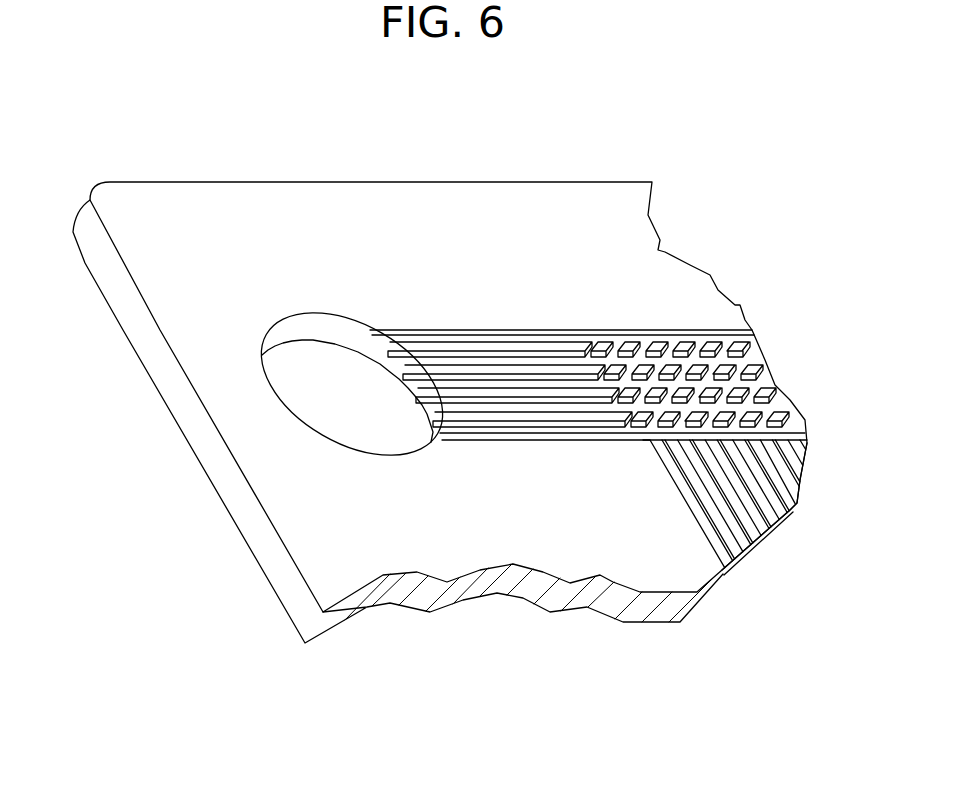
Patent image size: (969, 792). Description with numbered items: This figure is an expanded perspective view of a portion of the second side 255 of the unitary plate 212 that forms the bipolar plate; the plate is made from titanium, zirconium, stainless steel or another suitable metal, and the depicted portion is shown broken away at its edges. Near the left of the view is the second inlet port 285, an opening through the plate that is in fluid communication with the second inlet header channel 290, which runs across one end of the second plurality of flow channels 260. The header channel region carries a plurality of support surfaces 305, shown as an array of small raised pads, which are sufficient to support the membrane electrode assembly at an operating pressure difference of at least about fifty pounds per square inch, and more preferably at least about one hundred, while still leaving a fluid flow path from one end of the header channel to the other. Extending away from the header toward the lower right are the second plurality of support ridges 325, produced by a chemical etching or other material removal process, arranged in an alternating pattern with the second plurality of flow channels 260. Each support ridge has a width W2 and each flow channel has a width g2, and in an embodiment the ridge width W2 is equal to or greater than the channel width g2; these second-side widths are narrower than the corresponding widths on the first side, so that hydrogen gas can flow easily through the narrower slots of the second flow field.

The unitary plate 212 is at (174, 176).
The second side 255 is at (572, 208).
The second inlet port 285 is at (383, 457).
The second inlet header channel 290 is at (658, 347).
The support surface 305 is at (740, 375).
The second plurality of support ridges 325 is at (736, 566).
The second plurality of flow channels 260 is at (765, 538).
The width w2 W2 is at (737, 467).
The width g2 is at (765, 499).